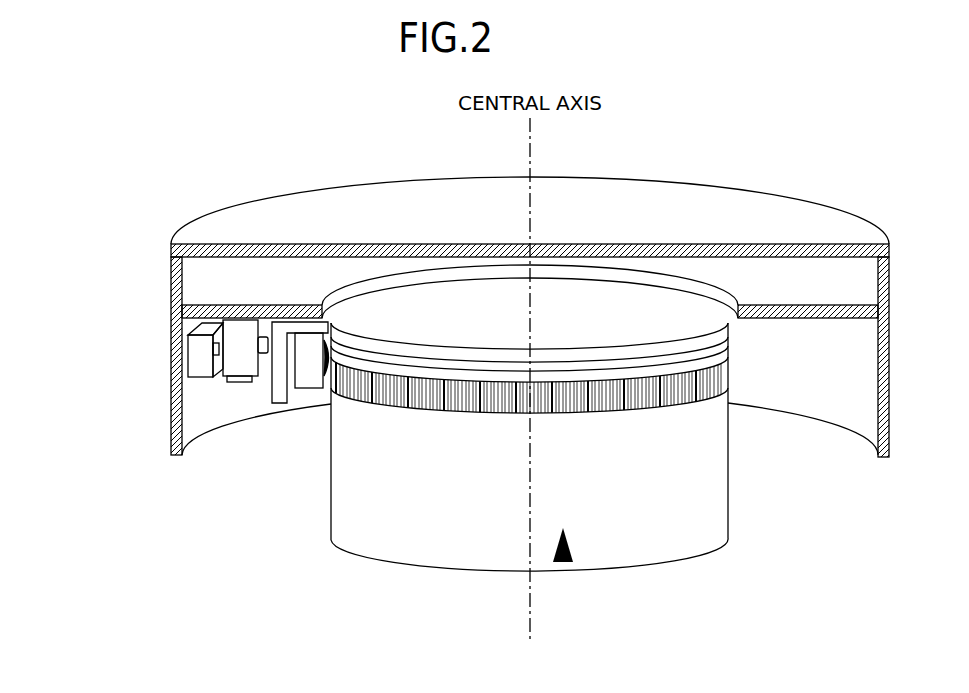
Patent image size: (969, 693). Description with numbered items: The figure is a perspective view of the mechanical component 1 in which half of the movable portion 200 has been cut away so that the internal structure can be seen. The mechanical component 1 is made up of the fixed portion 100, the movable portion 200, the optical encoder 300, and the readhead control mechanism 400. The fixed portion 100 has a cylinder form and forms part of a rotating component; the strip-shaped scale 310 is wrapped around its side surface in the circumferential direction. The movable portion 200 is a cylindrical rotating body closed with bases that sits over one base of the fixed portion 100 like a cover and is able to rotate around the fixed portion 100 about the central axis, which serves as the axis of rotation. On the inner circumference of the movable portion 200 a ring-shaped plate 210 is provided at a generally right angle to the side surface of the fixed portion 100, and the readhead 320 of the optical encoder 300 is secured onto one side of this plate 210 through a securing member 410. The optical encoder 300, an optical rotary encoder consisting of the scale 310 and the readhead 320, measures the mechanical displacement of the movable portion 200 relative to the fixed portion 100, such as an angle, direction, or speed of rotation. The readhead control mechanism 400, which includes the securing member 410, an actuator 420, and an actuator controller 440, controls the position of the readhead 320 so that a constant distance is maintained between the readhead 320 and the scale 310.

The mechanical component 1 is at (205, 141).
The fixed portion 100 is at (633, 570).
The movable portion 200 is at (730, 188).
The plate 210 is at (264, 284).
The optical encoder 300 is at (492, 501).
The scale 310 is at (373, 403).
The readhead 320 is at (305, 392).
The readhead control mechanism 400 is at (168, 440).
The securing member 410 is at (290, 406).
The actuator 420 is at (217, 386).
The actuator controller 440 is at (245, 383).